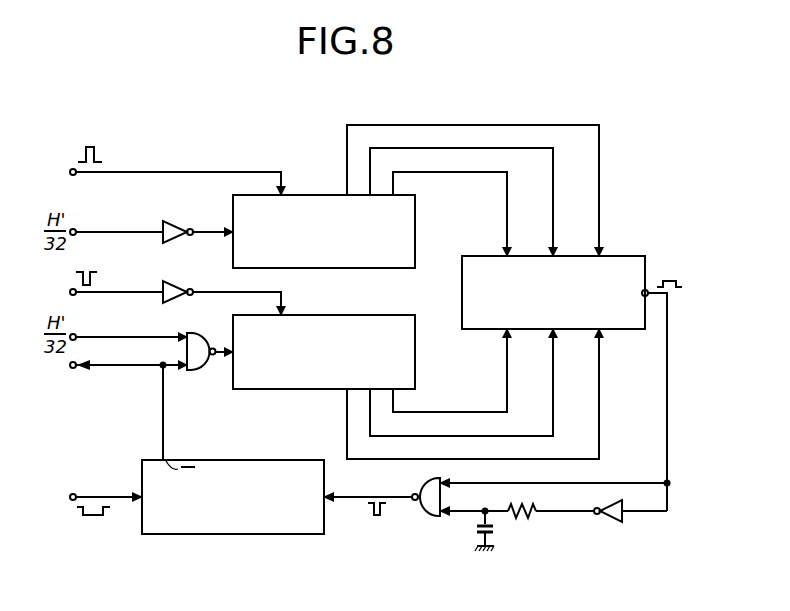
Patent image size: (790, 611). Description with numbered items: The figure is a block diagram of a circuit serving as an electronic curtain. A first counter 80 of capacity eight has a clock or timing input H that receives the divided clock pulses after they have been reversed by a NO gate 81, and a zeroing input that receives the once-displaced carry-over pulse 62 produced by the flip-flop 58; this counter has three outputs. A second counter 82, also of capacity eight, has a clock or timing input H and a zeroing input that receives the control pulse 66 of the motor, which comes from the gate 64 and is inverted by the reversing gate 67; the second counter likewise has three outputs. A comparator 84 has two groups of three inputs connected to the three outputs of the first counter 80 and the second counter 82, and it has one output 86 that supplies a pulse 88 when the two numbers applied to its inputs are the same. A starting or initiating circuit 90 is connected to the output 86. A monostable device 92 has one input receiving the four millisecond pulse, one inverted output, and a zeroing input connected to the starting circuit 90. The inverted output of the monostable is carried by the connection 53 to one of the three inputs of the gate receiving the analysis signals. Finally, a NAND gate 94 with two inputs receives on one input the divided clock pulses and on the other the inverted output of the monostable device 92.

The flip-flop 58 is at (165, 179).
The once-displaced carry-over pulse 62 is at (96, 158).
The NO gate 81 is at (180, 221).
The first counter 80 is at (415, 206).
The gate 64 is at (103, 293).
The control pulse 66 is at (93, 280).
The reversing gate 67 is at (181, 281).
The second counter 82 is at (397, 315).
The comparator 84 is at (472, 246).
The output 86 is at (649, 290).
The pulse 88 is at (679, 289).
The monostable device 92 is at (239, 460).
The NAND gate 94 is at (200, 371).
The connection 53 is at (72, 369).
The starting or initiating circuit 90 is at (522, 530).